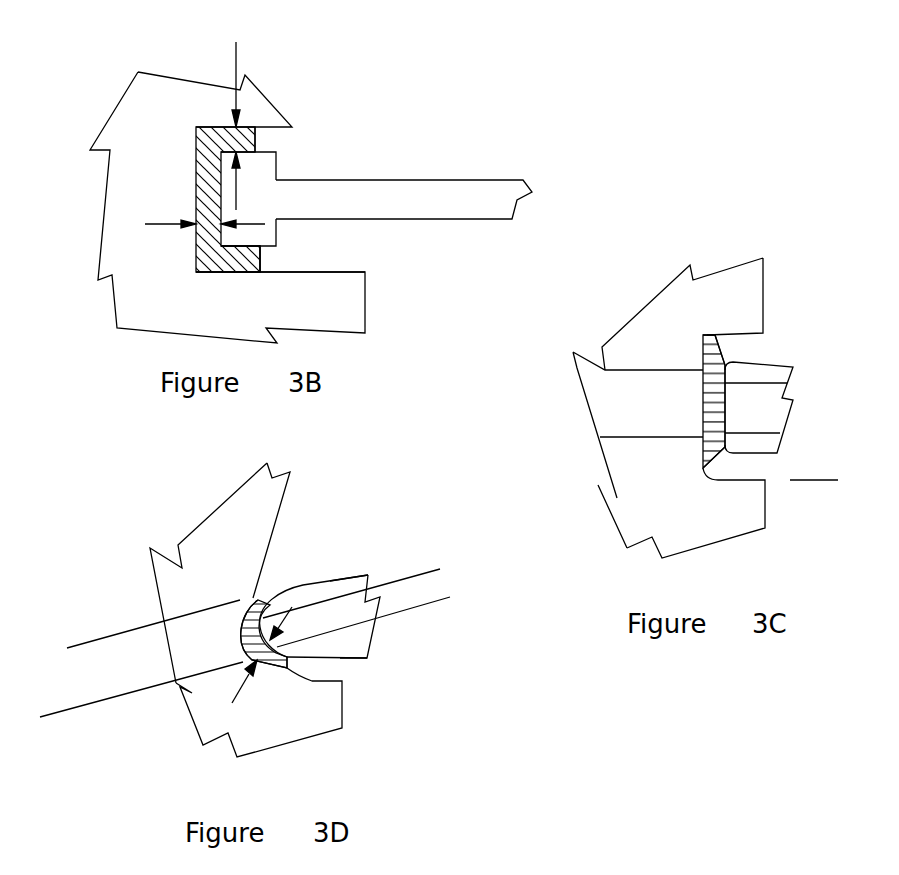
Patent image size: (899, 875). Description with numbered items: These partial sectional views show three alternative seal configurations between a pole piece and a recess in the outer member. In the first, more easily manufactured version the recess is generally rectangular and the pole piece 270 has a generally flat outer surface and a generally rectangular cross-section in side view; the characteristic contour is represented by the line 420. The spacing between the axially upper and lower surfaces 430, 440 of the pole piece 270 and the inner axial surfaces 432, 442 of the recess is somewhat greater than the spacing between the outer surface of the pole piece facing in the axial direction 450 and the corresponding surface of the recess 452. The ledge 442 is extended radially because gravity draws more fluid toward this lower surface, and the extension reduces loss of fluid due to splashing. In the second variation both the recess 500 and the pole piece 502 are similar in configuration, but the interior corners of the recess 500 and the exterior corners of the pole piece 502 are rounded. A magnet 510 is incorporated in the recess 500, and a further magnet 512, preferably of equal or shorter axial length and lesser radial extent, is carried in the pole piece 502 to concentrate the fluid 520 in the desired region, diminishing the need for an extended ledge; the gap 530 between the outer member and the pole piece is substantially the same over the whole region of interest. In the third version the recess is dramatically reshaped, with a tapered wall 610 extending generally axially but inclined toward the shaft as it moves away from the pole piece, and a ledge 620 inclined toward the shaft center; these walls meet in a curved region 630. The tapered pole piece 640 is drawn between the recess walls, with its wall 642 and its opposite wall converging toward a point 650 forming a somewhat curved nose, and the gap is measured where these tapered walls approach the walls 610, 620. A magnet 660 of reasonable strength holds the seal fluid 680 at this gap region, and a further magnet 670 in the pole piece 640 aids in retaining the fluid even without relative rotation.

In FIG. 3B, the characteristic contour line 420 is at (196, 147).
In FIG. 3B, the inner axial surface 432 is at (215, 127).
In FIG. 3B, the outer surface of the pole piece facing in the axial direction 450 is at (200, 198).
In FIG. 3B, the corresponding surface of the recess 452 is at (196, 238).
In FIG. 3B, the ledge 442 is at (207, 273).
In FIG. 3B, the axially upper surface of the pole piece 430 is at (255, 162).
In FIG. 3B, the pole piece 270 is at (272, 232).
In FIG. 3B, the axially lower surface of the pole piece 440 is at (249, 262).
In FIG. 3C, the recess 500 is at (733, 333).
In FIG. 3C, the pole piece 502 is at (770, 376).
In FIG. 3C, the magnet 510 is at (605, 418).
In FIG. 3C, the fluid 520 is at (703, 447).
In FIG. 3C, the gap 530 is at (748, 463).
In FIG. 3C, the further magnet 512 is at (800, 483).
In FIG. 3D, the tapered wall 610 is at (253, 570).
In FIG. 3D, the ledge 620 is at (312, 683).
In FIG. 3D, the curved region 630 is at (240, 660).
In FIG. 3D, the plug member 640 is at (320, 616).
In FIG. 3D, the pole piece wall 642 is at (345, 575).
In FIG. 3D, the point 650 is at (243, 640).
In FIG. 3D, the magnet 660 is at (141, 658).
In FIG. 3D, the further magnet 670 is at (366, 608).
In FIG. 3D, the seal fluid 680 is at (263, 608).